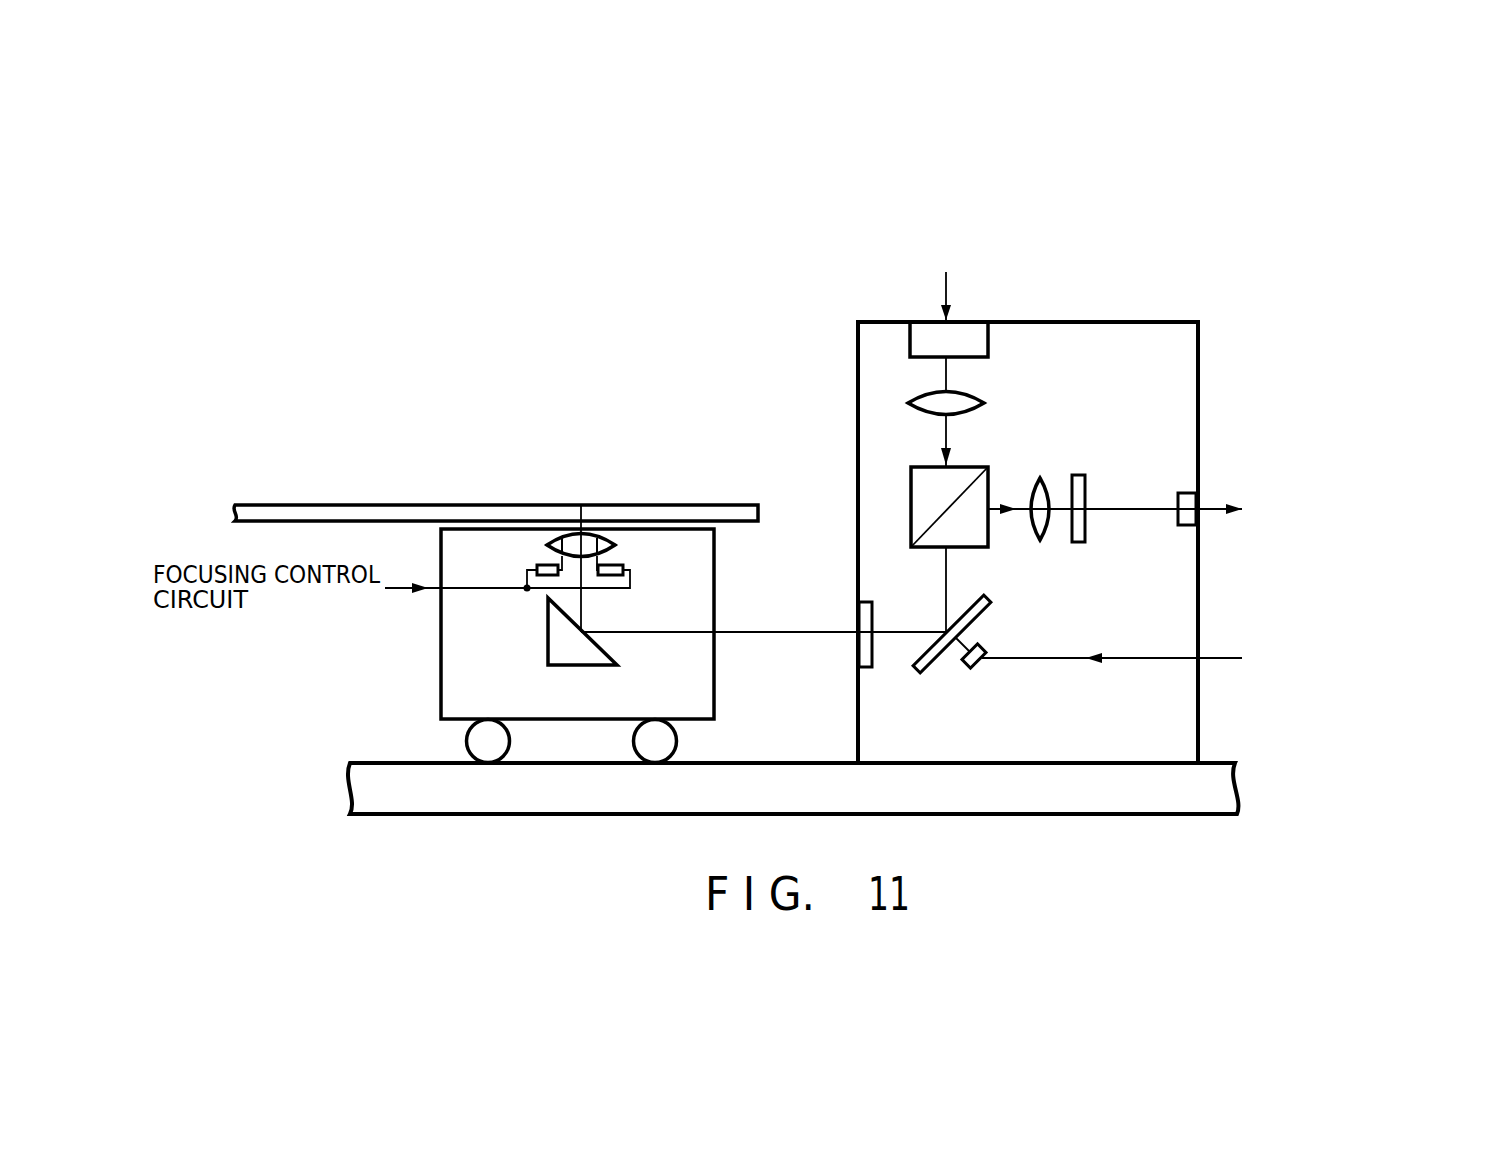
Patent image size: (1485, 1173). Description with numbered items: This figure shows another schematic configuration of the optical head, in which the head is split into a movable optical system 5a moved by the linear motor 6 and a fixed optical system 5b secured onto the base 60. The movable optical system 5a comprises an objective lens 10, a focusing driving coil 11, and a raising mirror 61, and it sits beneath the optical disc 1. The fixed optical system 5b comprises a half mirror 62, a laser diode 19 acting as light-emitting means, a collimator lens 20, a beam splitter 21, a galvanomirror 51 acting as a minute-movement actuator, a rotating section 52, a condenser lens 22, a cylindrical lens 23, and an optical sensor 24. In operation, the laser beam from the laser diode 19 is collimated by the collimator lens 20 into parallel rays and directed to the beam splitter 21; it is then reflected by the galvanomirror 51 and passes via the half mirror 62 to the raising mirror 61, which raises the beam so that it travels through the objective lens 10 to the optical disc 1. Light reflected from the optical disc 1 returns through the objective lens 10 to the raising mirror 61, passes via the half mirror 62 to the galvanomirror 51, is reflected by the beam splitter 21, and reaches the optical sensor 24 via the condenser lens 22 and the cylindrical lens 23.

The optical disc 1 is at (722, 505).
The movable optical system 5a is at (540, 616).
The fixed optical system 5b is at (858, 372).
The linear motor 6 is at (710, 692).
The objective lens 10 is at (616, 545).
The focusing driving coil 11 is at (540, 565).
The laser diode 19 is at (986, 340).
The collimator lens 20 is at (986, 403).
The beam splitter 21 is at (924, 478).
The condenser lens 22 is at (1044, 527).
The cylindrical lens 23 is at (1078, 542).
The optical sensor 24 is at (1186, 526).
The galvanomirror 51 is at (986, 603).
The rotating section 52 is at (976, 665).
The base 60 is at (350, 790).
The raising mirror 61 is at (596, 656).
The half mirror 62 is at (872, 620).